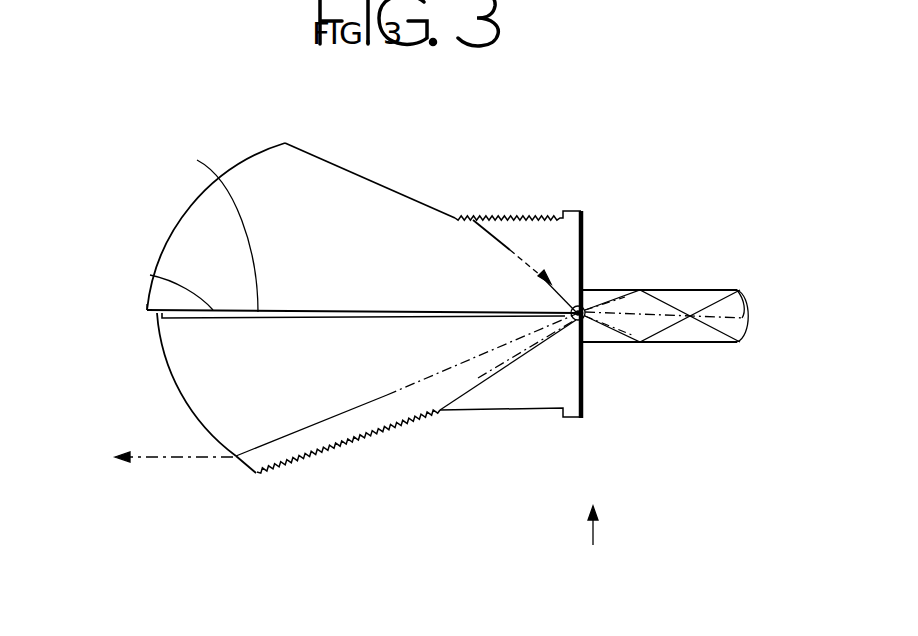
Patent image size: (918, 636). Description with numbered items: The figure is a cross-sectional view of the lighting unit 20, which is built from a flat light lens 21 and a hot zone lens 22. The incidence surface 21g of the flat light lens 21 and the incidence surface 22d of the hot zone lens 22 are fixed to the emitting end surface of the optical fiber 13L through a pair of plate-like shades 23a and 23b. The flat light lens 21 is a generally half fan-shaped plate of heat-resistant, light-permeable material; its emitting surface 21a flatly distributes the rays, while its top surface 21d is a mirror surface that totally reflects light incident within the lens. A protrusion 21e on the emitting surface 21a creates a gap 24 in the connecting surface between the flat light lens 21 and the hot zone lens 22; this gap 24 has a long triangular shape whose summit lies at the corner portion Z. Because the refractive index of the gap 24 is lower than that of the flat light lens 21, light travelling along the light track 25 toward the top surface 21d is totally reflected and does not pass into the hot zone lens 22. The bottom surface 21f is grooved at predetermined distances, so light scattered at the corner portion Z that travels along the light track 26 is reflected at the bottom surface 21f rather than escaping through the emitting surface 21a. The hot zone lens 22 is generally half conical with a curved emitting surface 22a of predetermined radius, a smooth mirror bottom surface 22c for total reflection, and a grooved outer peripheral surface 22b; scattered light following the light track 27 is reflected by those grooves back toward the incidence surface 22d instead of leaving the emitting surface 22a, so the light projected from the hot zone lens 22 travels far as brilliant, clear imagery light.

The optical fiber 13L is at (700, 297).
The lighting unit 20 is at (594, 552).
The flat light lens 21 is at (295, 443).
The emitting surface 21a is at (172, 383).
The top surface 21d is at (393, 318).
The protrusion 21e is at (155, 322).
The bottom surface 21f is at (410, 422).
The incidence surface 21g is at (579, 372).
The hot zone lens 22 is at (310, 195).
The emitting surface 22a is at (172, 227).
The outer peripheral surface 22b is at (503, 216).
The bottom surface 22c is at (204, 221).
The incidence surface 22d is at (580, 240).
The plate-like shade 23a is at (583, 378).
The plate-like shade 23b is at (583, 227).
The gap 24 is at (150, 275).
The light track 25 is at (174, 444).
The light track 26 is at (577, 323).
The light track 27 is at (553, 282).
The corner portion Z is at (596, 288).